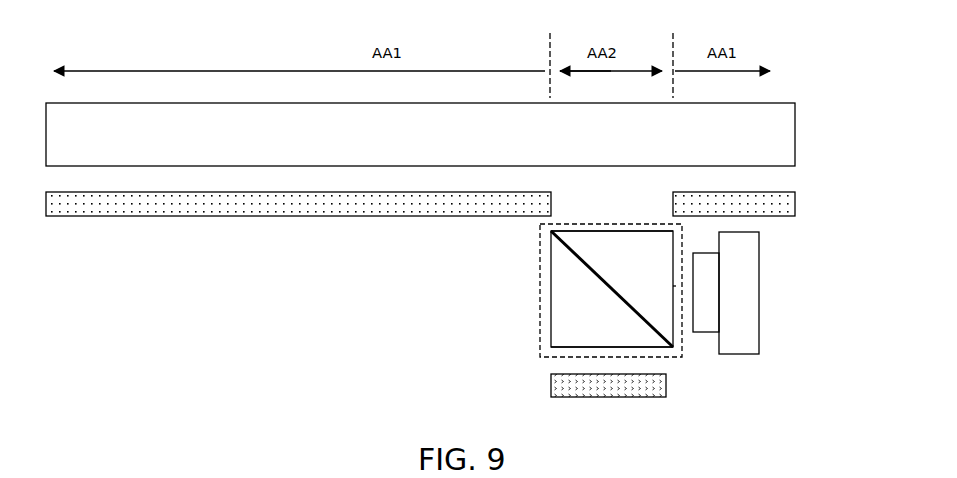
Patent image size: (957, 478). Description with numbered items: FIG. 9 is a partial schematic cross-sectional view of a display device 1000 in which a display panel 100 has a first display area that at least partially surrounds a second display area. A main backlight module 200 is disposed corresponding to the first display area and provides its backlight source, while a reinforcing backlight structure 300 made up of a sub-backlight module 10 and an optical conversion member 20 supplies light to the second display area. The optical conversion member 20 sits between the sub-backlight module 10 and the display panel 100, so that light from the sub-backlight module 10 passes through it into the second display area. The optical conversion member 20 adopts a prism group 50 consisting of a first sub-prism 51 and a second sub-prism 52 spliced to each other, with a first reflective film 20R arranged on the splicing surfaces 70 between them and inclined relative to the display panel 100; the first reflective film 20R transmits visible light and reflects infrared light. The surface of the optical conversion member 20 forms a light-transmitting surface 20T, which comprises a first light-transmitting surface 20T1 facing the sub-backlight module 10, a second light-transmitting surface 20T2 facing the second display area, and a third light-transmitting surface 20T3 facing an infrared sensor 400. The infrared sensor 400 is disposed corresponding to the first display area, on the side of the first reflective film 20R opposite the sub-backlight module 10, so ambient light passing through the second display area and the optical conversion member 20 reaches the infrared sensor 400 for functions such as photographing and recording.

The display device 1000 is at (784, 15).
The display panel 100 is at (780, 134).
The main backlight module 200 is at (783, 203).
The reinforcing backlight structure 300 is at (240, 255).
The sub-backlight module 10 is at (666, 382).
The optical conversion member 20 is at (684, 226).
The light-transmitting surface 20T is at (240, 320).
The first light-transmitting surface 20T1 is at (556, 348).
The second light-transmitting surface 20T2 is at (552, 226).
The third light-transmitting surface 20T3 is at (673, 288).
The first reflective film 20R is at (592, 273).
The splicing surfaces 70 is at (556, 289).
The prism group 50 is at (629, 289).
The first sub-prism 51 is at (574, 325).
The second sub-prism 52 is at (663, 320).
The infrared sensor 400 is at (735, 260).